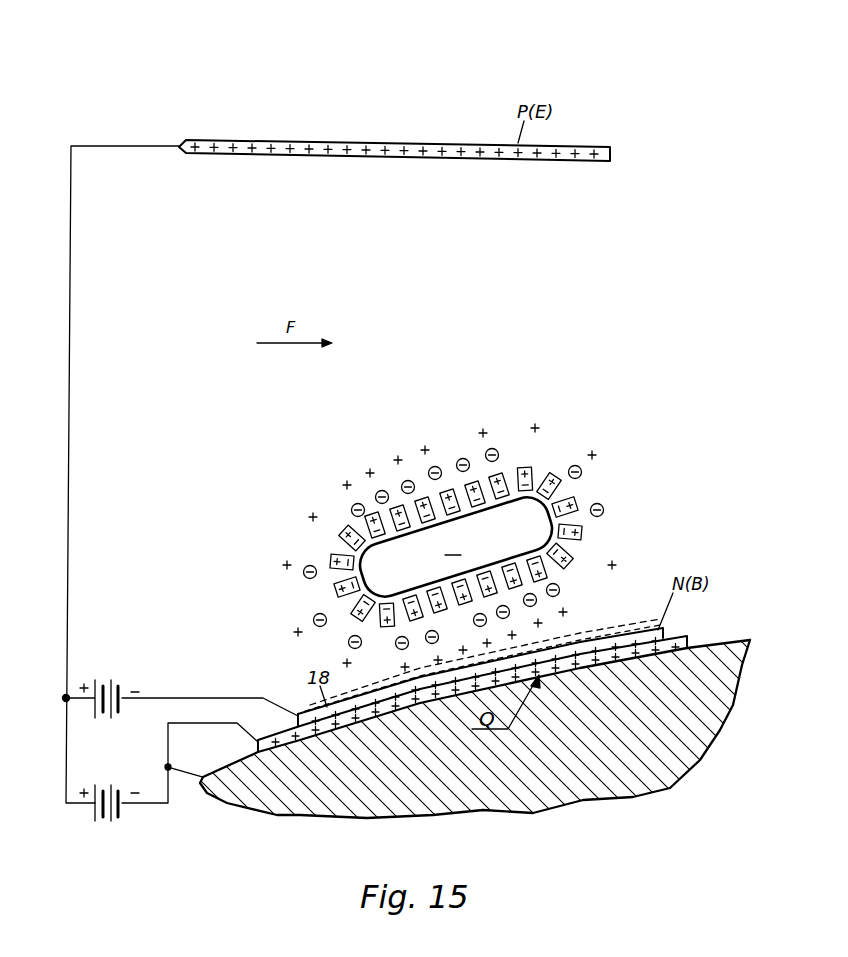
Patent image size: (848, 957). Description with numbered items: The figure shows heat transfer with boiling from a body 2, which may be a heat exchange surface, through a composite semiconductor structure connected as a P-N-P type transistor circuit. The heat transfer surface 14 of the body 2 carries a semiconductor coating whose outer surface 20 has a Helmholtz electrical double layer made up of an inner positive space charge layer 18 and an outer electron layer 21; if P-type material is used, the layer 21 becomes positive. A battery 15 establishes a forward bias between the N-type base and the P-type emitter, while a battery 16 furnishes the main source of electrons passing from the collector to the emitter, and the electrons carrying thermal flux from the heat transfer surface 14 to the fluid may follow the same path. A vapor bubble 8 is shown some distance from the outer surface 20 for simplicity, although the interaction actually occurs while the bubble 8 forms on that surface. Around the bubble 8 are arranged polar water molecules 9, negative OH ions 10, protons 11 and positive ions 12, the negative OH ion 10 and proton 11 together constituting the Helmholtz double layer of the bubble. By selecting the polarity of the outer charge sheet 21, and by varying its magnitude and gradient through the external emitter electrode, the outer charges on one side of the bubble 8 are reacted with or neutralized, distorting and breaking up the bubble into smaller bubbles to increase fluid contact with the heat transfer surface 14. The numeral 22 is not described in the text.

The body 2 is at (713, 693).
The vapor bubble 8 is at (455, 547).
The polar molecule of water 9 is at (540, 480).
The negative OH ion 10 is at (486, 453).
The proton 11 is at (487, 430).
The positive ion 12 is at (445, 440).
The heat transfer surface 14 is at (732, 638).
The battery 15 is at (110, 682).
The battery 16 is at (118, 820).
The positive space charge layer 18 is at (683, 640).
The semiconductor surface 20 is at (620, 632).
The outer electron layer 21 is at (597, 637).
The electrode connection 22 is at (303, 699).